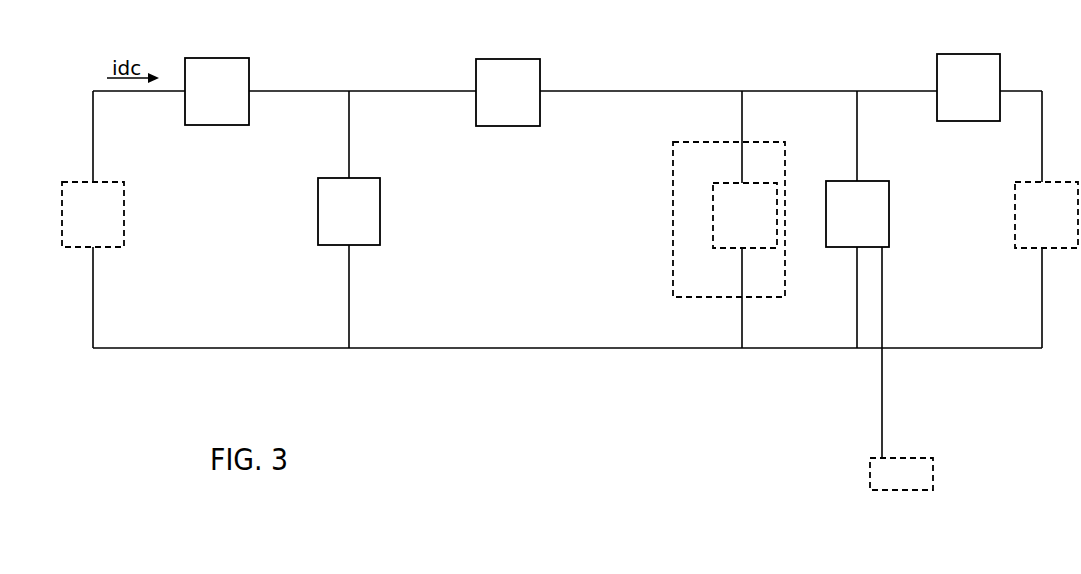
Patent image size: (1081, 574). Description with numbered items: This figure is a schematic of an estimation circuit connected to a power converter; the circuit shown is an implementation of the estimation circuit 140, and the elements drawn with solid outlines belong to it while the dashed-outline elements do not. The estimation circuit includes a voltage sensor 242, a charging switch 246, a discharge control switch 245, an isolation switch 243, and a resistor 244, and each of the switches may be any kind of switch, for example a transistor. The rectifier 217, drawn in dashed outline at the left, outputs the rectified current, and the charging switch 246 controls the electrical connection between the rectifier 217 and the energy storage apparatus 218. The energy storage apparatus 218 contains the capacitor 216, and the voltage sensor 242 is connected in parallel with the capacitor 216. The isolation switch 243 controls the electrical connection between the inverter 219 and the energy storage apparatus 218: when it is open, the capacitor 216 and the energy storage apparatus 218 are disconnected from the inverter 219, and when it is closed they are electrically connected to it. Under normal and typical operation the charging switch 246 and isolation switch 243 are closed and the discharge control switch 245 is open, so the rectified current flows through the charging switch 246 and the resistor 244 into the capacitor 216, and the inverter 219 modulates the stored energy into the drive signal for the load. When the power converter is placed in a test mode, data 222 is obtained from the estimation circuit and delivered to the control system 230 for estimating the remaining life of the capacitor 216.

The estimation circuit 140 is at (605, 47).
The capacitor 216 is at (745, 215).
The rectifier 217 is at (93, 214).
The energy storage apparatus 218 is at (729, 219).
The inverter 219 is at (1046, 215).
The data 222 is at (893, 422).
The control system 230 is at (901, 474).
The voltage sensor 242 is at (857, 214).
The isolation switch 243 is at (968, 87).
The resistor 244 is at (508, 92).
The discharge control switch 245 is at (349, 211).
The charging switch 246 is at (217, 91).